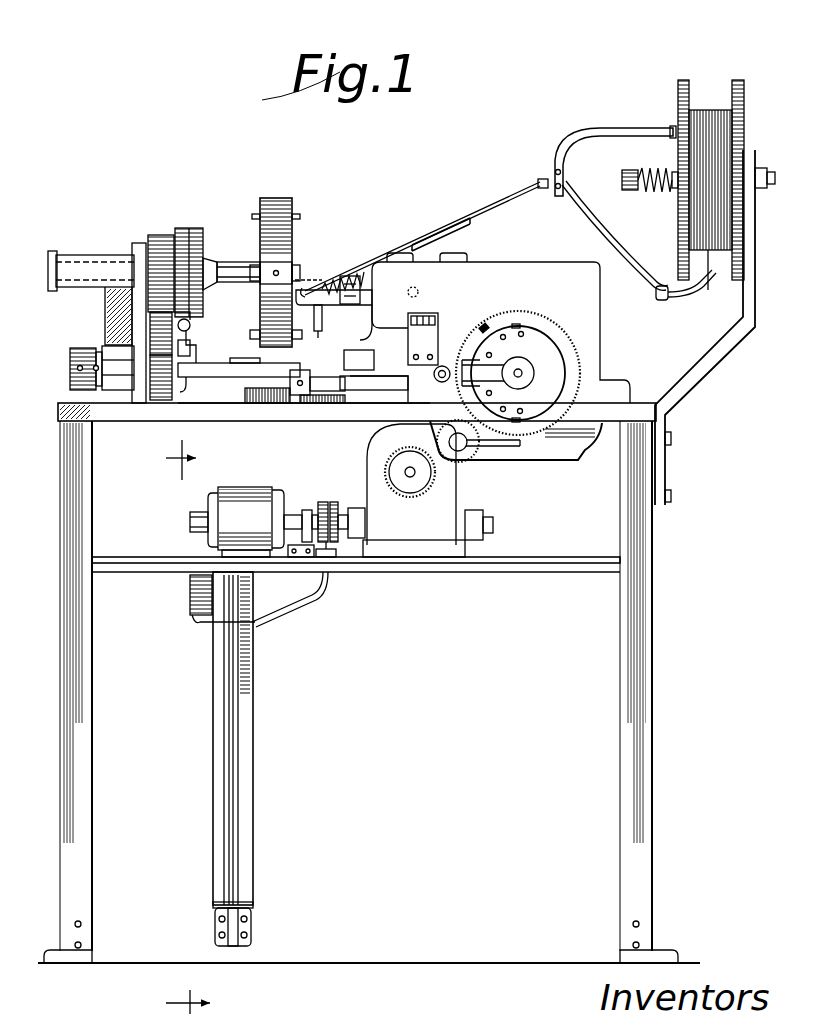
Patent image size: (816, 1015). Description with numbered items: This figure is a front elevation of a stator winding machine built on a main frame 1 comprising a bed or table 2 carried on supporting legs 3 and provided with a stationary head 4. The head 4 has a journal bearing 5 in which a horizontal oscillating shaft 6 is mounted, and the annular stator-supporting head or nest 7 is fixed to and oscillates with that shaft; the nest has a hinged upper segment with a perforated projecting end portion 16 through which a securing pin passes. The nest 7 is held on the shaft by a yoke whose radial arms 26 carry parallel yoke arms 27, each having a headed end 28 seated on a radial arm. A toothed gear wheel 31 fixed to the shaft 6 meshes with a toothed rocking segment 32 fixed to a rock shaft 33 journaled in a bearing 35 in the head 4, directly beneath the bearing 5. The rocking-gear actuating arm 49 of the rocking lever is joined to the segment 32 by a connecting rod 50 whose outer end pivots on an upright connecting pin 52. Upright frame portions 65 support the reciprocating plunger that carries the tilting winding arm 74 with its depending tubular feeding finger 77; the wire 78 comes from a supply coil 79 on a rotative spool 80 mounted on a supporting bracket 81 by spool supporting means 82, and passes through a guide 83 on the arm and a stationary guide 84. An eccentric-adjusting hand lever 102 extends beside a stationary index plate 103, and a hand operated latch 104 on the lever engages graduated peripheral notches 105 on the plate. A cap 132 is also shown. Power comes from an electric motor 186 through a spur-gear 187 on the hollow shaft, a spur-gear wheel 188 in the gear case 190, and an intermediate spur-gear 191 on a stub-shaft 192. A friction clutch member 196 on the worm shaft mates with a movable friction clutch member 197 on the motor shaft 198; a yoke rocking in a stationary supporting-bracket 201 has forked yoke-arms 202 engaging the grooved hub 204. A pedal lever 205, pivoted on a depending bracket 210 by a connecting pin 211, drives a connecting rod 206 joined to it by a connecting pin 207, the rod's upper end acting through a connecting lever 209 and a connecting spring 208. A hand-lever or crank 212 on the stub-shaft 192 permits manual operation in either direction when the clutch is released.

The main frame 1 is at (670, 432).
The bed or table 2 is at (106, 424).
The supporting legs 3 is at (90, 688).
The stationary head 4 is at (140, 245).
The journal bearing 5 is at (90, 262).
The oscillating shaft 6 is at (48, 270).
The stator-supporting head or nest 7 is at (280, 200).
The perforated projecting end portion 16 is at (201, 727).
The radial arms 26 is at (203, 239).
The yoke arms 27 is at (249, 264).
The headed end 28 is at (209, 285).
The toothed gear wheel 31 is at (162, 235).
The toothed rocking segment 32 is at (191, 323).
The rock shaft 33 is at (70, 371).
The journal bearing 35 is at (100, 350).
The rocking-gear actuating arm 49 is at (222, 372).
The connecting rod 50 is at (196, 352).
The connecting pin 52 is at (182, 378).
The upright frame portions 65 is at (596, 292).
The winding arm 74 is at (362, 322).
The tubular feeding sleeve or winding finger 77 is at (322, 316).
The wire 78 is at (330, 262).
The supply coil 79 is at (704, 110).
The rotative spool 80 is at (745, 118).
The supporting bracket 81 is at (708, 370).
The spool supporting means 82 is at (670, 172).
The guide 83 is at (346, 258).
The stationary guide 84 is at (632, 108).
The eccentric-adjusting hand lever 102 is at (534, 373).
The stationary index plate 103 is at (536, 340).
The hand operated latch 104 is at (442, 382).
The peripheral notches 105 is at (496, 330).
The cap 132 is at (468, 258).
The electric motor 186 is at (232, 490).
The spur-gear 187 is at (572, 336).
The spur-gear wheel 188 is at (404, 500).
The gear case 190 is at (474, 528).
The intermediate spur-gear 191 is at (437, 438).
The stub-shaft 192 is at (460, 452).
The friction clutch member 196 is at (337, 510).
The movable friction clutch member 197 is at (326, 504).
The motor shaft 198 is at (190, 526).
The stationary supporting-bracket 201 is at (302, 572).
The forked yoke-arms 202 is at (310, 512).
The grooved hub 204 is at (336, 560).
The clutch-actuating pedal or lever 205 is at (253, 906).
The connecting rod 206 is at (234, 740).
The connecting pin 207 is at (249, 919).
The connecting spring 208 is at (190, 598).
The connecting lever 209 is at (266, 622).
The depending bracket 210 is at (256, 836).
The connecting pin 211 is at (249, 935).
The hand-lever or crank 212 is at (505, 448).